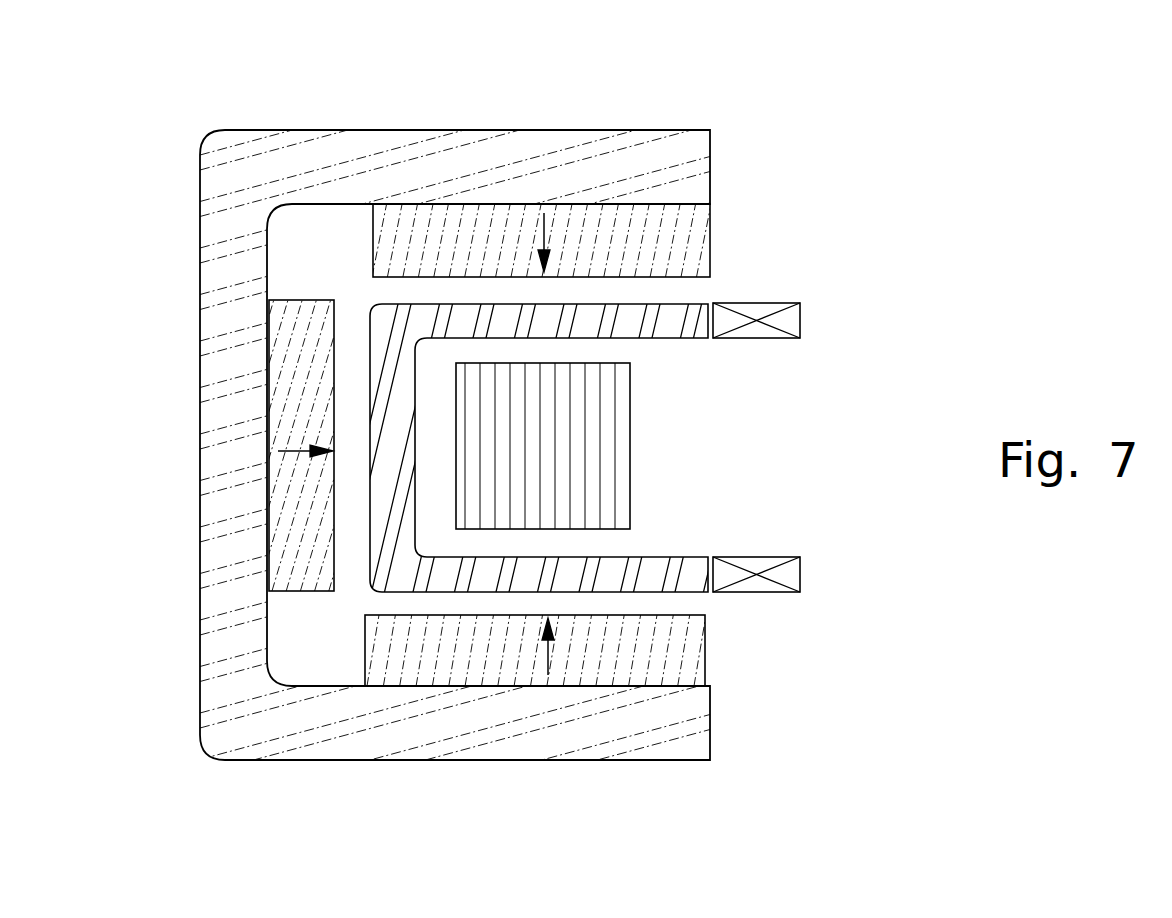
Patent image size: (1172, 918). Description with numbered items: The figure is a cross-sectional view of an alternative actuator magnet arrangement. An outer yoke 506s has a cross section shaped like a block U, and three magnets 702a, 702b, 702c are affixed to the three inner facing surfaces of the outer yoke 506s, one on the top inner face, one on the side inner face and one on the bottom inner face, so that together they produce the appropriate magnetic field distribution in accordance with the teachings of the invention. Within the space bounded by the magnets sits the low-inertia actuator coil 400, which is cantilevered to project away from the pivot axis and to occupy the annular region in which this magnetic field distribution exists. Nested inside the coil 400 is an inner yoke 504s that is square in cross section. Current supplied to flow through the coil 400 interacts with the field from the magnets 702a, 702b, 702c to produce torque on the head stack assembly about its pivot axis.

The outer yoke 506s is at (350, 142).
The magnet 702a is at (692, 250).
The magnet 702b is at (283, 440).
The magnet 702c is at (450, 662).
The low-inertia actuator coil 400 is at (667, 322).
The inner yoke 504s is at (601, 462).